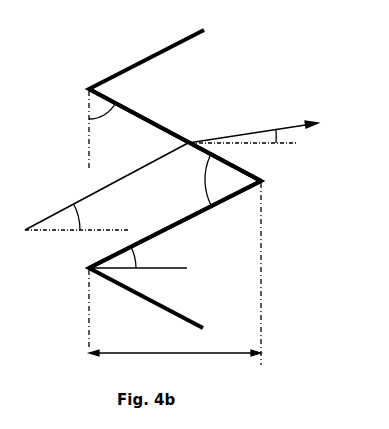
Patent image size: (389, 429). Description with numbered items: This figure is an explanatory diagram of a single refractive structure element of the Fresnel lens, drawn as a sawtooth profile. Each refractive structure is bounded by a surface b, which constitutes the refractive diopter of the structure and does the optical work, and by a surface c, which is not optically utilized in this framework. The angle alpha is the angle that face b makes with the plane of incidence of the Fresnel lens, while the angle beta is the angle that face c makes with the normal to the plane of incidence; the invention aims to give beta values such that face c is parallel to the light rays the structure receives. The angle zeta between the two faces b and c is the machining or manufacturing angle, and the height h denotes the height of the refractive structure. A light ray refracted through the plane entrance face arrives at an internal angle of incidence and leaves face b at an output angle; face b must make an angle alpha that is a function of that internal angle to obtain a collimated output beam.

The surface b (face b) b is at (175, 135).
The surface c (face c) c is at (175, 224).
The height of the refractive structures h is at (175, 340).
The angle of face b with the plane of incidence alpha is at (105, 125).
The angle of face c with the normal to the plane of incidence beta is at (138, 255).
The machining angle (manufacturing angle) zeta is at (192, 181).